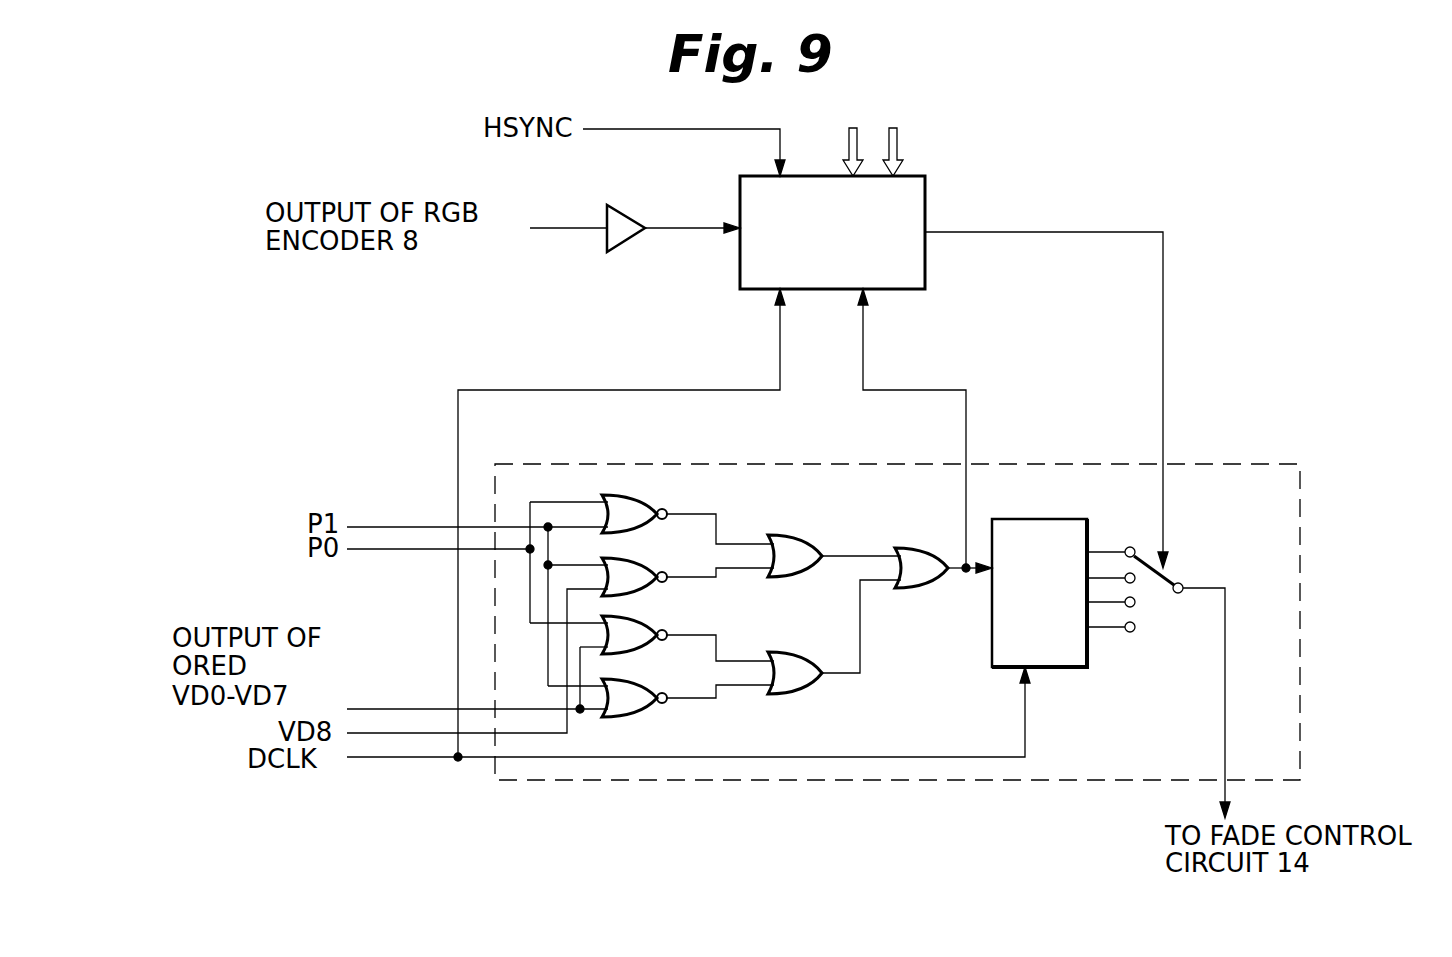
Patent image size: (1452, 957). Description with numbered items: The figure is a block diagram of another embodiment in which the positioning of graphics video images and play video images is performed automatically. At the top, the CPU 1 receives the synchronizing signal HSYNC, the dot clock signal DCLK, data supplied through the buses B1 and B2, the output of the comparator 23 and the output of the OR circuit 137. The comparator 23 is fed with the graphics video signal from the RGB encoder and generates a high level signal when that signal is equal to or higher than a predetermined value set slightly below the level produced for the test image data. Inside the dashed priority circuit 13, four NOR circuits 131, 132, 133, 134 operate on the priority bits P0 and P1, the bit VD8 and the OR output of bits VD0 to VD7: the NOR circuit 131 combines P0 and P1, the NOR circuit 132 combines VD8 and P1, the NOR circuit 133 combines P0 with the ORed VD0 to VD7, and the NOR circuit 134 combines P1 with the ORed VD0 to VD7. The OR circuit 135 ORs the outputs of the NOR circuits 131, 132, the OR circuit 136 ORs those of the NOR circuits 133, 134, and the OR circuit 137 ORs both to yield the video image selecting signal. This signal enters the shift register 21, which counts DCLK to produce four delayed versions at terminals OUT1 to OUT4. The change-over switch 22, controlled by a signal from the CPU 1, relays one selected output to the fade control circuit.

The CPU 1 is at (925, 200).
The comparator 23 is at (630, 215).
The bus B1 is at (848, 152).
The bus B2 is at (898, 152).
The priority circuit 13 is at (1303, 620).
The NOR circuit 131 is at (648, 497).
The NOR circuit 132 is at (640, 558).
The NOR circuit 133 is at (645, 618).
The NOR circuit 134 is at (645, 717).
The OR circuit 135 is at (808, 535).
The OR circuit 136 is at (790, 652).
The OR circuit 137 is at (910, 548).
The shift register 21 is at (1070, 519).
The change-over switch 22 is at (1172, 572).